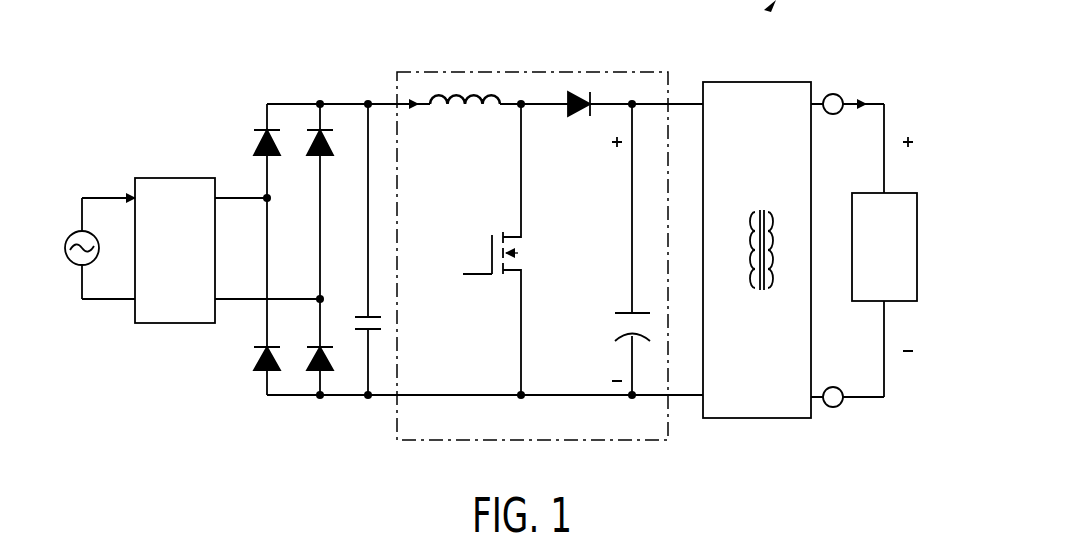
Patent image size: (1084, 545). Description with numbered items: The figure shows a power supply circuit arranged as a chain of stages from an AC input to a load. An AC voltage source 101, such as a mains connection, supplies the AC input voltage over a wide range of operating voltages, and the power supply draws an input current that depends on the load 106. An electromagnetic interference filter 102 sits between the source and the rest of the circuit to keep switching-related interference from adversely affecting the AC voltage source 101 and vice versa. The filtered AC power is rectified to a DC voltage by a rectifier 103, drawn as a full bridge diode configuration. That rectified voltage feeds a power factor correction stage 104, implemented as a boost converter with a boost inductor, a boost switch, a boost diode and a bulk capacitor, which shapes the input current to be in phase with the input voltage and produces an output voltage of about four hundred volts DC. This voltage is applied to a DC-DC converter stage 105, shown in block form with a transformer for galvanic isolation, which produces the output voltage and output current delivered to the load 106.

The AC voltage source 101 is at (72, 234).
The electromagnetic interference (EMI) filter 102 is at (147, 178).
The rectifier 103 is at (291, 72).
The power factor correction (PFC) stage 104 is at (535, 72).
The DC-DC converter stage 105 is at (755, 82).
The load 106 is at (897, 193).